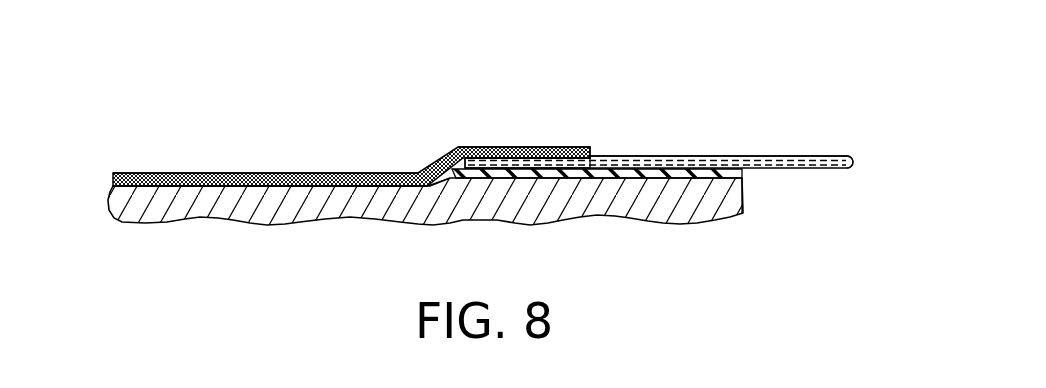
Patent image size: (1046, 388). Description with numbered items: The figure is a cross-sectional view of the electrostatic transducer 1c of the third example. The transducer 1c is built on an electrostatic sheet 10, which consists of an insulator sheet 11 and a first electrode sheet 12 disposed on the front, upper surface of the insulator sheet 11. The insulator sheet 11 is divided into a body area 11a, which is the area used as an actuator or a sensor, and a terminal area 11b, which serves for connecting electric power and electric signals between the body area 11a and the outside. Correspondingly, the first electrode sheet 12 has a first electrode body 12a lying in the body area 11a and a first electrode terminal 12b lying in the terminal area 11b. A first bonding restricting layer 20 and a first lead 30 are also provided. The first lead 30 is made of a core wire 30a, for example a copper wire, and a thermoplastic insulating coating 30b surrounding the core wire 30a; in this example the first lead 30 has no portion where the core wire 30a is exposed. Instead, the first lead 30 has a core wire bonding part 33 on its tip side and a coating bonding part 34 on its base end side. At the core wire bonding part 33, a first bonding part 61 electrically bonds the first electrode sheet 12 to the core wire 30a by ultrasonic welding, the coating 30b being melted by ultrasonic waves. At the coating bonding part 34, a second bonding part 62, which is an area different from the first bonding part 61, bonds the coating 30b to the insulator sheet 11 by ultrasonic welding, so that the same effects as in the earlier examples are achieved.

The electrostatic sheet 10 is at (450, 119).
The insulator sheet 11 is at (250, 207).
The body area 11a is at (293, 203).
The terminal area 11b is at (492, 207).
The first electrode sheet 12 is at (350, 113).
The first electrode body 12a is at (185, 175).
The first electrode terminal 12b is at (482, 147).
The first bonding restricting layer 20 is at (677, 170).
The first lead 30 is at (659, 88).
The core wire 30a is at (748, 157).
The coating 30b is at (825, 153).
The core wire bonding part 33 is at (530, 160).
The coating bonding part 34 is at (650, 157).
The first bonding part 61 is at (503, 146).
The second bonding part 62 is at (678, 165).
The transducer 1c is at (851, 105).